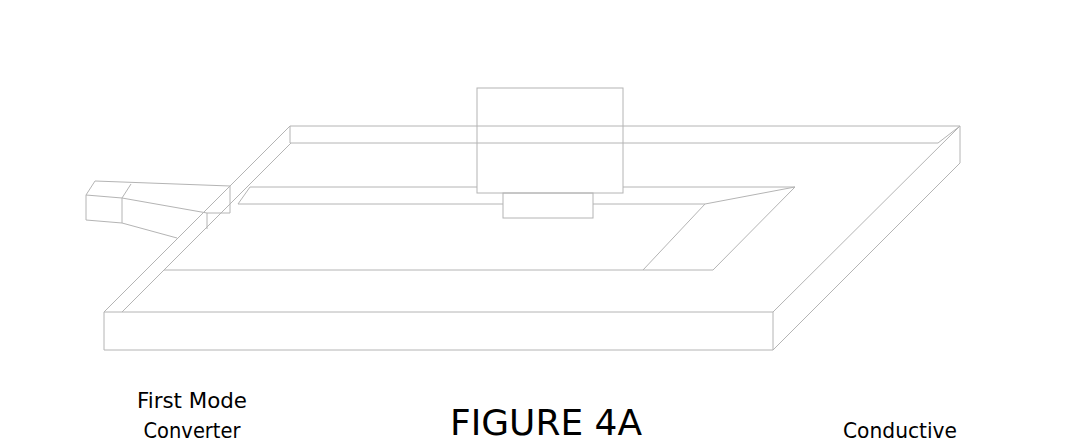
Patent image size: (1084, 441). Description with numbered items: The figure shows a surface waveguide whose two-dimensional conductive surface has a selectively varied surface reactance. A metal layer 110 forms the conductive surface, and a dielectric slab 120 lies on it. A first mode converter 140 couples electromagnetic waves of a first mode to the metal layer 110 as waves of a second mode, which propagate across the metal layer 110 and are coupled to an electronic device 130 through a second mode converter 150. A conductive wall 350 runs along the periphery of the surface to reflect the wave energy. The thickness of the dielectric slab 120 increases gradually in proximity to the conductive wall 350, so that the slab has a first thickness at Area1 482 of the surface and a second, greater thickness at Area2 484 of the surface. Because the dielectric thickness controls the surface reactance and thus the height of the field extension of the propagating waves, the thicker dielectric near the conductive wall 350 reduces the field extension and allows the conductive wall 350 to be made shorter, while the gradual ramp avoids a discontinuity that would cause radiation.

The metal layer 110 is at (600, 358).
The dielectric slab 120 is at (332, 232).
The electronic device 130 is at (575, 179).
The first mode converter 140 is at (130, 185).
The second mode converter 150 is at (608, 203).
The conductive wall 350 is at (846, 124).
The Area1 of the surface 482 is at (401, 260).
The Area2 of the surface 484 is at (893, 174).